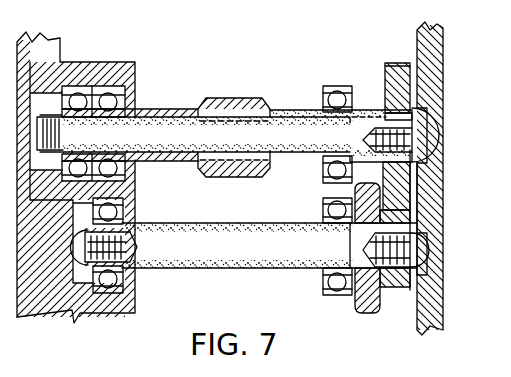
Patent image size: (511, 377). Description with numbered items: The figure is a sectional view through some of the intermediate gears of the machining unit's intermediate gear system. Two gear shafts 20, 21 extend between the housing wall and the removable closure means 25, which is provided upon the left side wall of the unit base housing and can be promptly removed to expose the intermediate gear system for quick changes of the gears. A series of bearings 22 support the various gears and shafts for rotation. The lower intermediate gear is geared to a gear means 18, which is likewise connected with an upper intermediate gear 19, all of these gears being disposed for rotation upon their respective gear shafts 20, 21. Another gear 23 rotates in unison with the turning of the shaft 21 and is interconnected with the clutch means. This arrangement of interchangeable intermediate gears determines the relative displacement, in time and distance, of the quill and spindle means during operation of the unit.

The gear means 18 is at (395, 287).
The upper intermediate gear 19 is at (407, 67).
The gear shaft 20 is at (280, 262).
The gear shaft 21 is at (283, 110).
The bearings 22 is at (128, 62).
The gear 23 is at (215, 98).
The closure means 25 is at (443, 187).